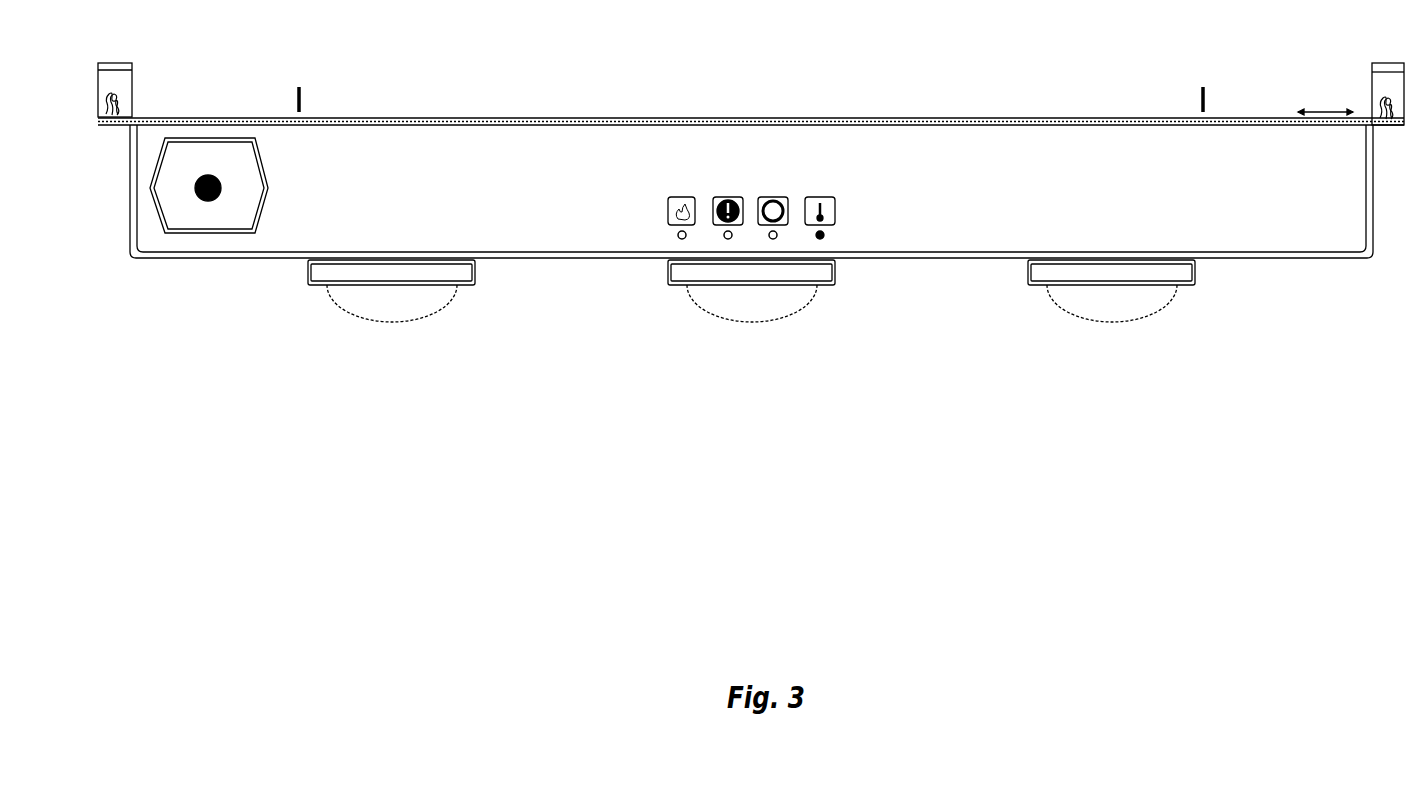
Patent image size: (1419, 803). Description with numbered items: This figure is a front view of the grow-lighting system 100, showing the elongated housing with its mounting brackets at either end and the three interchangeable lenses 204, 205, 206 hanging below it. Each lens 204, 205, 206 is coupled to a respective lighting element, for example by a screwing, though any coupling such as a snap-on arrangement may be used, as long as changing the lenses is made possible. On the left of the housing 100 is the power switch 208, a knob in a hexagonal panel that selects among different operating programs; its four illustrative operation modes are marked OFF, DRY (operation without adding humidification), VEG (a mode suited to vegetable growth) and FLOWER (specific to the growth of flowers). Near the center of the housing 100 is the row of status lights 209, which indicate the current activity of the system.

The grow light housing 100 is at (1253, 136).
The lens 204 is at (387, 310).
The lens 205 is at (752, 313).
The lens 206 is at (1110, 307).
The power switch 208 is at (183, 203).
The status lights 209 is at (745, 173).